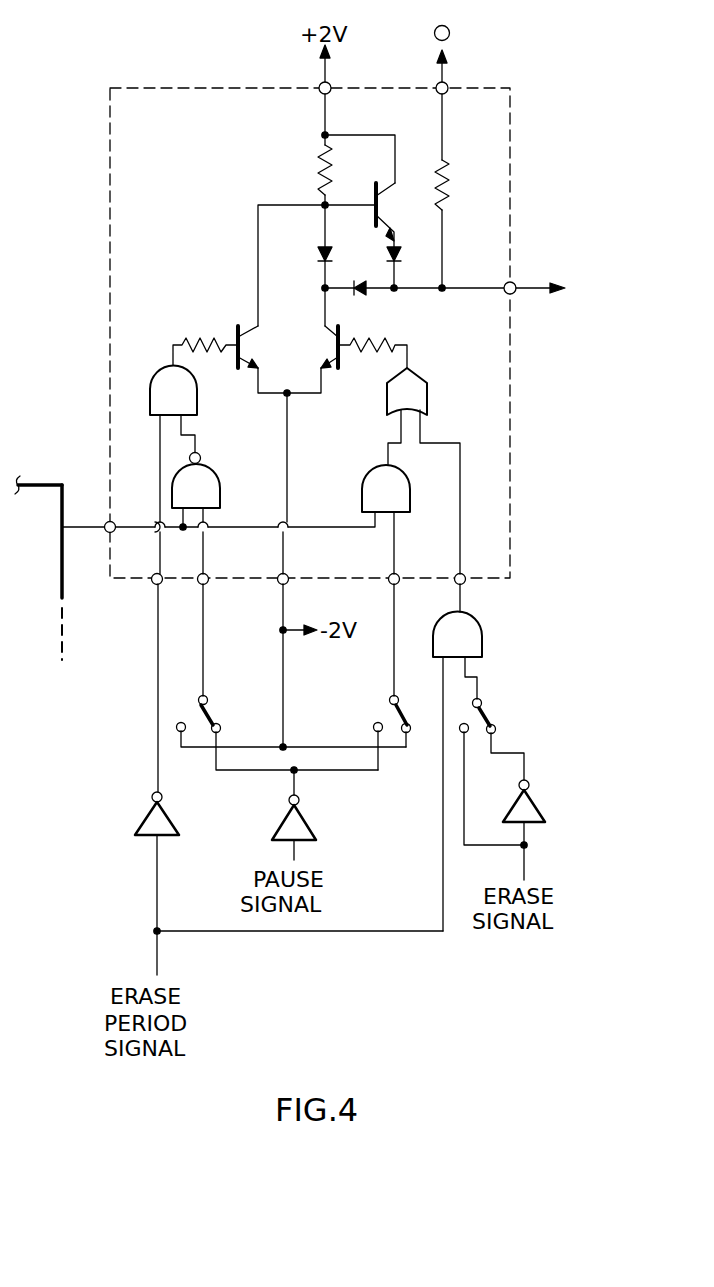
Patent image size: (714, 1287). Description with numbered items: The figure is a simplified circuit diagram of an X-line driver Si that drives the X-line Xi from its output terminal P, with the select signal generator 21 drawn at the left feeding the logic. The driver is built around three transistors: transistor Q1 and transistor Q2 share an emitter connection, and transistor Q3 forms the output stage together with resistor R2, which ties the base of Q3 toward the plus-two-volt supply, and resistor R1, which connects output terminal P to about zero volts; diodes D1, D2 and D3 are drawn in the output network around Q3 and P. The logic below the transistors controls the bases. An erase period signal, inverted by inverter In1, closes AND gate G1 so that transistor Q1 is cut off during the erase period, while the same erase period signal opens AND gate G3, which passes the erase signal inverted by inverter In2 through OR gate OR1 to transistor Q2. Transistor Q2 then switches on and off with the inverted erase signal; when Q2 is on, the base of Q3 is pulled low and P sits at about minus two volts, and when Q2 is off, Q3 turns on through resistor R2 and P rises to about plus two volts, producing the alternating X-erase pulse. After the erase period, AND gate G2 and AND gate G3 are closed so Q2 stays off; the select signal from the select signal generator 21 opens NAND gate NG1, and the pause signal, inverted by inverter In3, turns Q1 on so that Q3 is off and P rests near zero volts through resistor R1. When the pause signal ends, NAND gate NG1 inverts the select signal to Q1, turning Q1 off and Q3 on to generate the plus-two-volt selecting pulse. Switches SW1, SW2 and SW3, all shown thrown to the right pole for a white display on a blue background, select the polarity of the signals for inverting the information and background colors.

The select signal generator 21 is at (47, 560).
The X-line driver Si is at (193, 83).
The resistor R1 is at (446, 201).
The resistor R2 is at (332, 184).
The transistor Q1 is at (253, 347).
The transistor Q2 is at (317, 347).
The transistor Q3 is at (392, 215).
The diode D1 is at (340, 248).
The diode D2 is at (407, 248).
The diode D3 is at (355, 296).
The AND gate G1 is at (173, 390).
The AND gate G2 is at (386, 488).
The AND gate G3 is at (457, 635).
The NAND gate NG1 is at (196, 481).
The OR gate OR1 is at (407, 391).
The switch SW1 is at (213, 714).
The switch SW2 is at (375, 714).
The switch SW3 is at (493, 716).
The inverter In1 is at (148, 821).
The inverter In2 is at (532, 805).
The inverter In3 is at (286, 823).
The output terminal P is at (515, 288).
The X-line Xi is at (552, 292).